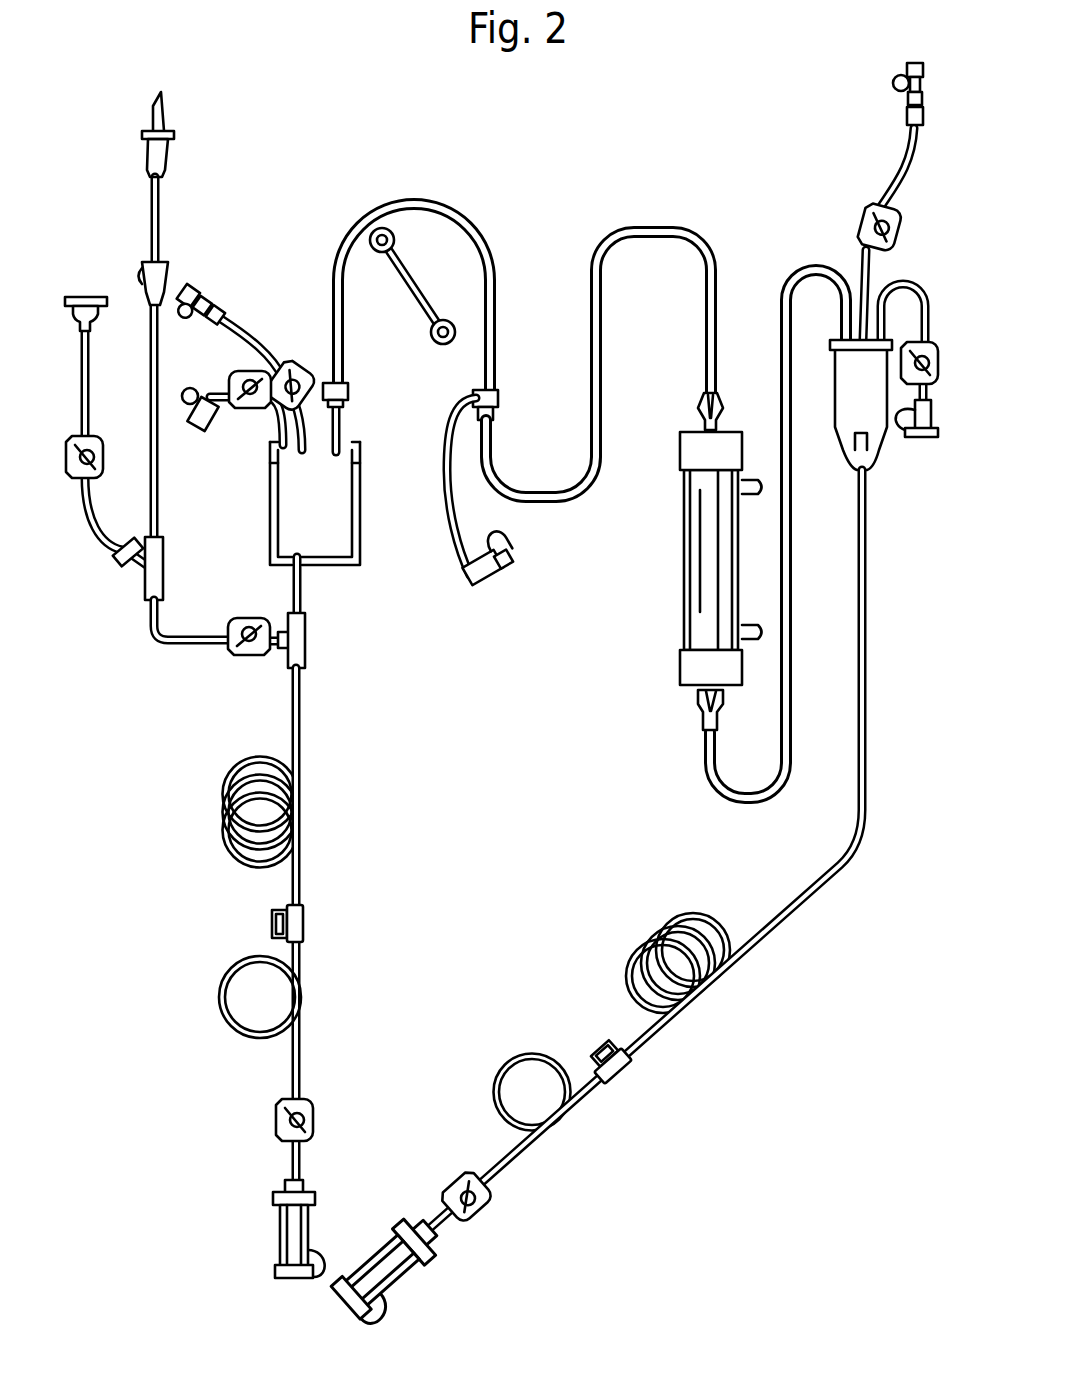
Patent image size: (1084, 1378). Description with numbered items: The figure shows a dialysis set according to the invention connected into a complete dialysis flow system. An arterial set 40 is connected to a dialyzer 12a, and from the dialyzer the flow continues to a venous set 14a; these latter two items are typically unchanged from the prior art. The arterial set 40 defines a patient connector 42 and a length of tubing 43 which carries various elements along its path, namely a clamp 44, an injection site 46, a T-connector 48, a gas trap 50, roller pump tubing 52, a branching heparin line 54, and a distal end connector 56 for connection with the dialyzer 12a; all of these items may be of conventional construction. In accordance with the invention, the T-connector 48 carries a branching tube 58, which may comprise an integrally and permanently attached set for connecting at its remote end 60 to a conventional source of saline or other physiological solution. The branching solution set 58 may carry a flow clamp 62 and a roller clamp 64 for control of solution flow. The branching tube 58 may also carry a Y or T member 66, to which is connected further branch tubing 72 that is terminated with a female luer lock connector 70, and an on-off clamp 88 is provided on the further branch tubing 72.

The remote end 60 is at (166, 122).
The roller clamp 64 is at (170, 274).
The female luer lock connector 70 is at (84, 297).
The on-off clamp 88 is at (100, 440).
The further branch tubing 72 is at (116, 548).
The Y or T member 66 is at (145, 590).
The branching tube 58 is at (151, 652).
The flow clamp 62 is at (245, 660).
The T-connector 48 is at (306, 655).
The gas trap 50 is at (355, 550).
The roller pump tubing 52 is at (448, 206).
The branching heparin line 54 is at (468, 545).
The distal end connector 56 is at (702, 410).
The dialyzer 12a is at (686, 560).
The arterial set 40 is at (306, 856).
The injection site 46 is at (305, 925).
The length of tubing 43 is at (300, 970).
The clamp 44 is at (308, 1120).
The patient connector 42 is at (283, 1183).
The venous set 14a is at (770, 922).